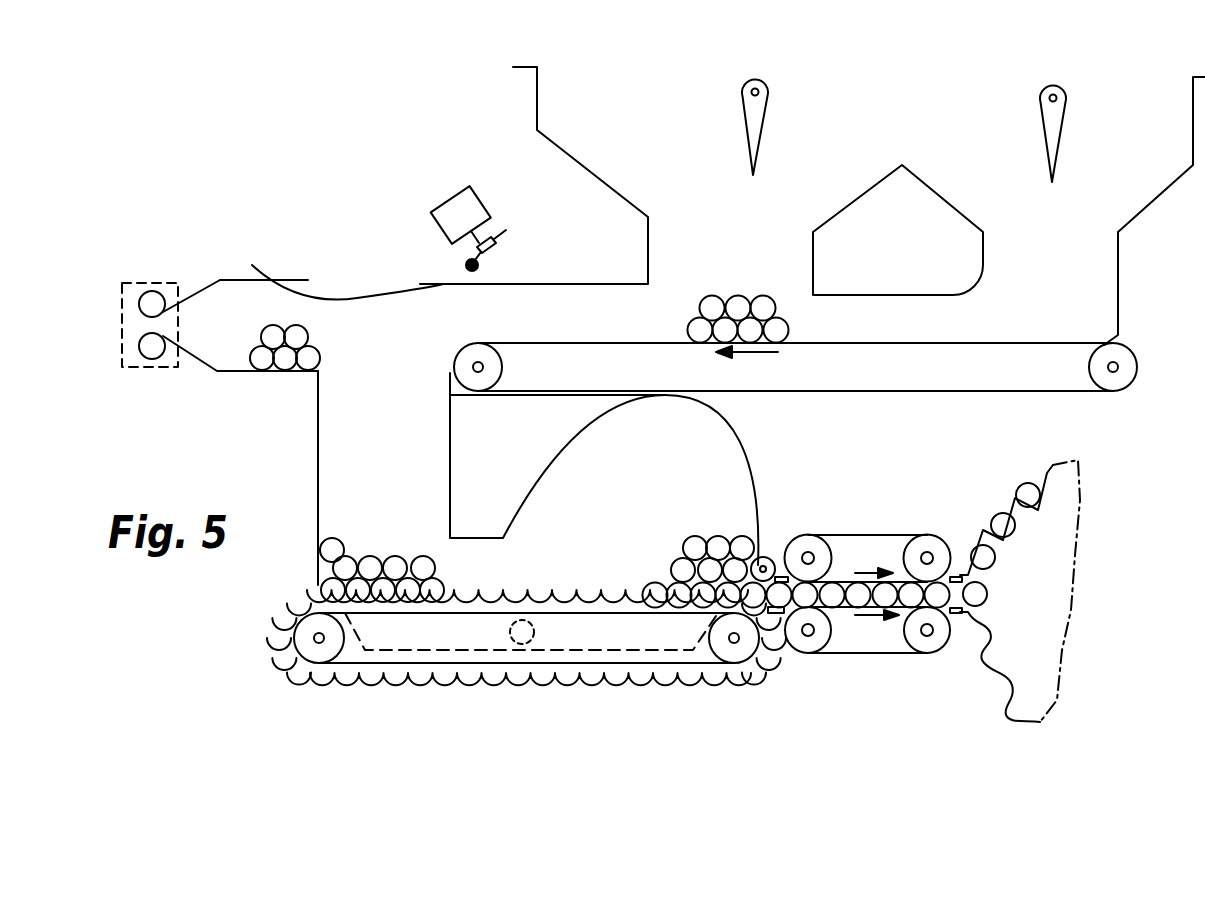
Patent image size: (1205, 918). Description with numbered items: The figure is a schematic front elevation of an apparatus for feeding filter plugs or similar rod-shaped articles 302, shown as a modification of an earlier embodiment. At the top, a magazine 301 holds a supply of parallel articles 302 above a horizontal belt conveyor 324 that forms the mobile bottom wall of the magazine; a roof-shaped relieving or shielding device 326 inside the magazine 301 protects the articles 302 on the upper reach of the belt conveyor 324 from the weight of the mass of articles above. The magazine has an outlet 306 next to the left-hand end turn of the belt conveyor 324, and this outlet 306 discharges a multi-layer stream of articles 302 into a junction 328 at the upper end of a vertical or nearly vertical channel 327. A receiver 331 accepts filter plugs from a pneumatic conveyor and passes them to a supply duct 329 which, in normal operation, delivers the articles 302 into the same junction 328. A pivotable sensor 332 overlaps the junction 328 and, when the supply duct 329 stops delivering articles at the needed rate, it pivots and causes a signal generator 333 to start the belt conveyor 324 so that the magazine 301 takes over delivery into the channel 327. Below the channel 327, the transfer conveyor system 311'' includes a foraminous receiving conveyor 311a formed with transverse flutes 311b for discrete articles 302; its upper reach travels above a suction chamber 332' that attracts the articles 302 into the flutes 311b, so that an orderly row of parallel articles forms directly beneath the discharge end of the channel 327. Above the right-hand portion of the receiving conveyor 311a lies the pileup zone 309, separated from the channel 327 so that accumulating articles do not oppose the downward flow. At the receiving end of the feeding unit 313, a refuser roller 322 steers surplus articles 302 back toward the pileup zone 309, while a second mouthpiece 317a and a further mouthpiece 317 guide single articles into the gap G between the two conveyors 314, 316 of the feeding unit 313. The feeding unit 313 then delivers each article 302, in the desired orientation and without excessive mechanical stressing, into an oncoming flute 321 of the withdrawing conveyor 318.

The magazine 301 is at (963, 132).
The rod-shaped articles 302 is at (773, 327).
The outlet 306 is at (568, 298).
The pileup zone 309 is at (745, 475).
The transfer conveyor system 311'' is at (526, 680).
The receiving conveyor 311a is at (432, 674).
The transverse flutes 311b is at (343, 675).
The feeding unit 313 is at (868, 657).
The conveyor 314 is at (885, 552).
The conveyor 316 is at (888, 645).
The guide 317 is at (955, 575).
The second mouthpiece 317a is at (777, 617).
The withdrawing conveyor 318 is at (1045, 643).
The flutes 321 is at (985, 632).
The refuser roller 322 is at (765, 560).
The belt conveyor 324 is at (967, 383).
The relieving or shielding device 326 is at (870, 220).
The channel 327 is at (337, 447).
The junction 328 is at (412, 342).
The supply duct 329 is at (237, 298).
The receiver 331 is at (142, 290).
The pivotable sensor 332 is at (347, 264).
The suction chamber 332' is at (536, 681).
The signal generator 333 is at (470, 207).
The gap G is at (843, 583).